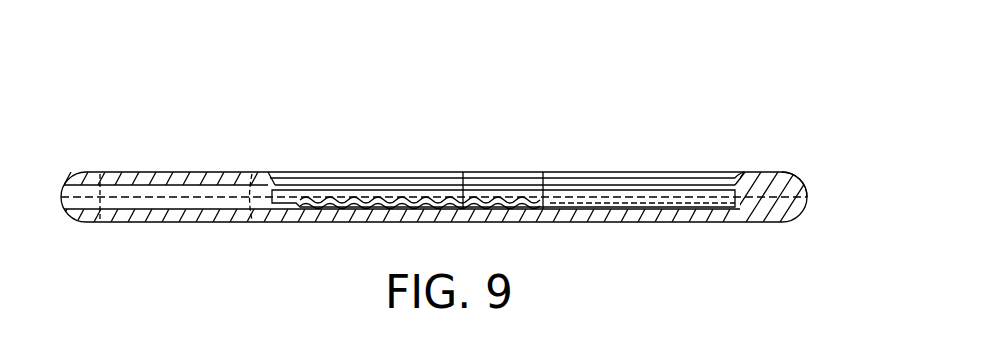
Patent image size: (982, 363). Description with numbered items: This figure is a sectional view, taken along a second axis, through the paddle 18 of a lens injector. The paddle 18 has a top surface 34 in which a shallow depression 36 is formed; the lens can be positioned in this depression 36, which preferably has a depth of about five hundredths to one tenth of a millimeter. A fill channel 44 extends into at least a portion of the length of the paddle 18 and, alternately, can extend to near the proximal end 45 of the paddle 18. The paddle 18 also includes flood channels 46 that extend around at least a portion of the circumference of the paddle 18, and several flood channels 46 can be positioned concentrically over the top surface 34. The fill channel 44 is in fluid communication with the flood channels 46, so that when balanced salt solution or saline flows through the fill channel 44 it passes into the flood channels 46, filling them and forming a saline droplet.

The paddle 18 is at (168, 105).
The fill channel 44 is at (227, 190).
The flood channel 46 is at (315, 190).
The depression 36 is at (722, 183).
The top surface 34 is at (770, 158).
The proximal end 45 is at (800, 177).